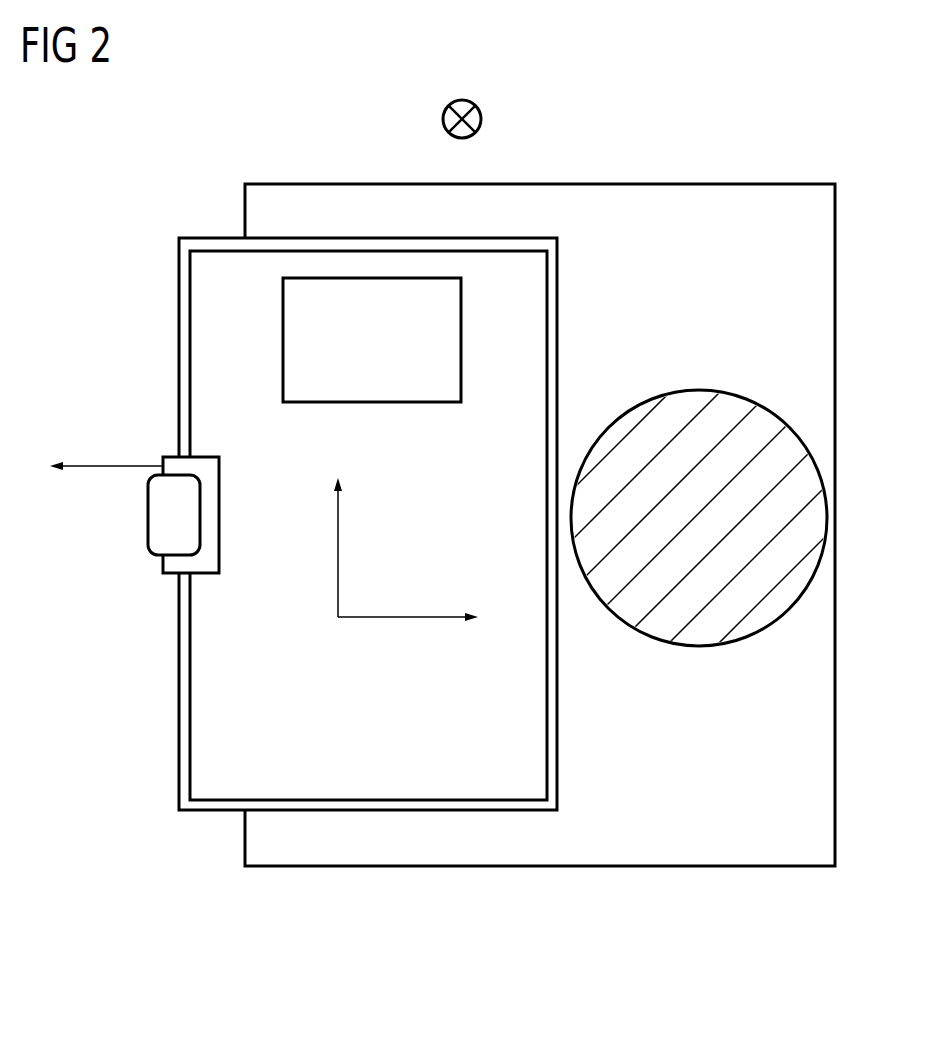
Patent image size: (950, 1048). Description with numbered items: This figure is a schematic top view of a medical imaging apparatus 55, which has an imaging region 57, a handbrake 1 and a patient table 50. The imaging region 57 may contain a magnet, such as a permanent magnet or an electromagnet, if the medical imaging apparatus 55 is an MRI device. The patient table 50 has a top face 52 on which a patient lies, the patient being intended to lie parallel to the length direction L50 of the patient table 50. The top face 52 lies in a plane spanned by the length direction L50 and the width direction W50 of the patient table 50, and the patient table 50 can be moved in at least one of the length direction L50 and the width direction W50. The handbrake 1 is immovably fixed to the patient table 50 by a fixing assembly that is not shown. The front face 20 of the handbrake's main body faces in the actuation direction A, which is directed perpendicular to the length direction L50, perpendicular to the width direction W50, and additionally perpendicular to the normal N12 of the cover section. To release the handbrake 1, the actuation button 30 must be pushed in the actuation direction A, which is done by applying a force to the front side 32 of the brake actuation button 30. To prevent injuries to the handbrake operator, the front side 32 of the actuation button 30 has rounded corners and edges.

The handbrake 1 is at (125, 523).
The front face 20 is at (173, 467).
The actuation button 30 is at (116, 515).
The front side 32 is at (158, 527).
The normal N12 is at (87, 466).
The patient table 50 is at (151, 789).
The top face 52 is at (222, 790).
The medical imaging apparatus 55 is at (499, 906).
The imaging region 57 is at (810, 518).
The actuation direction A is at (481, 122).
The length direction L50 is at (338, 540).
The width direction W50 is at (398, 620).